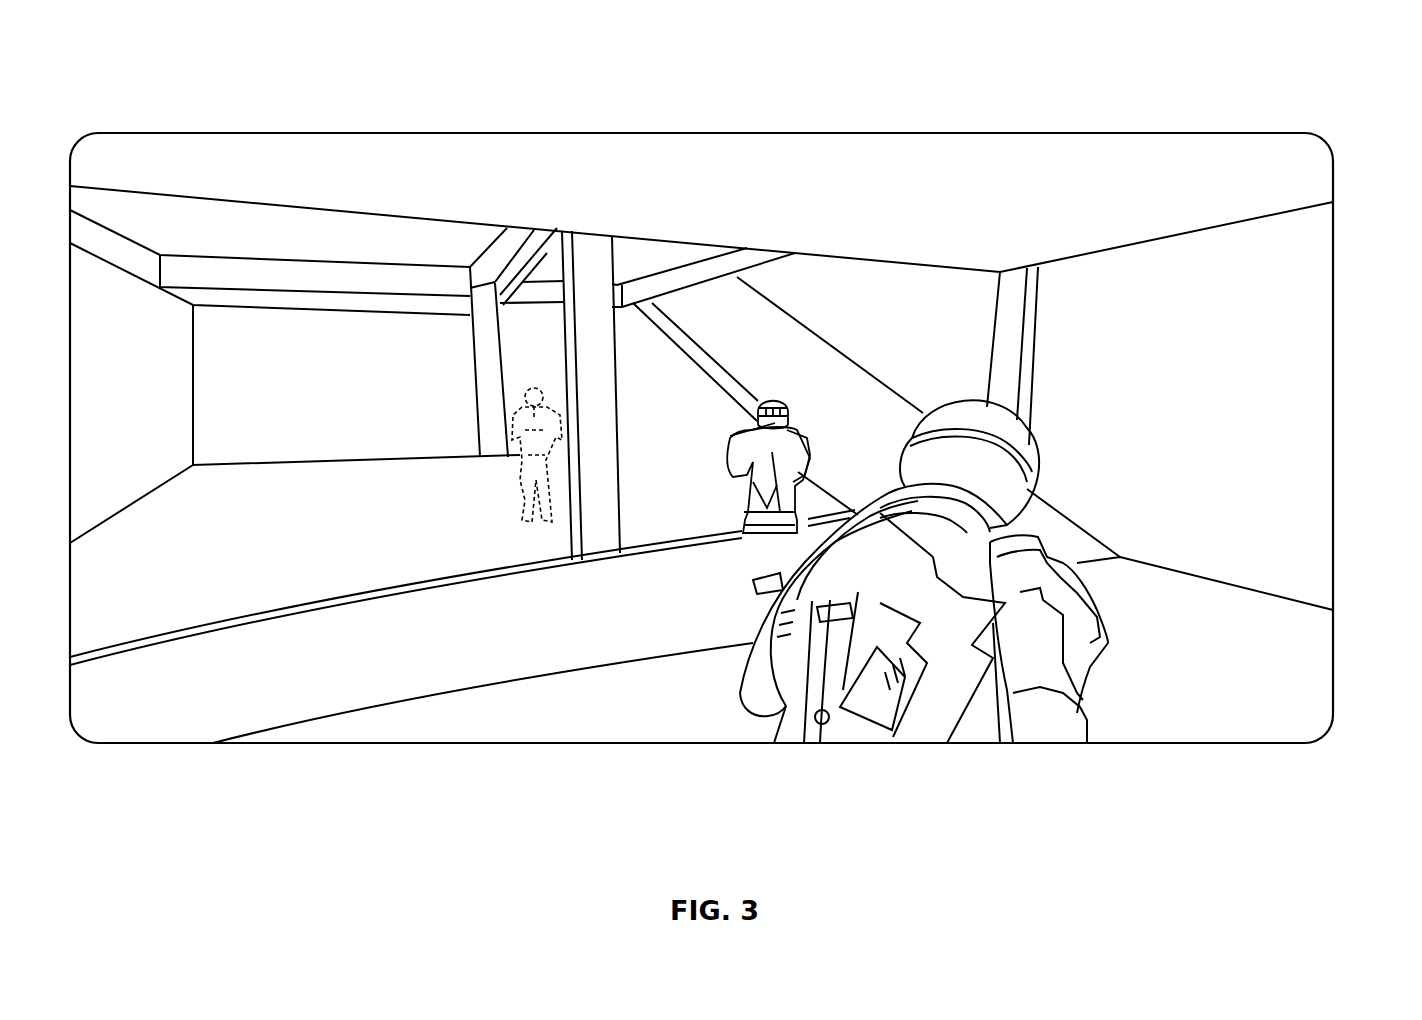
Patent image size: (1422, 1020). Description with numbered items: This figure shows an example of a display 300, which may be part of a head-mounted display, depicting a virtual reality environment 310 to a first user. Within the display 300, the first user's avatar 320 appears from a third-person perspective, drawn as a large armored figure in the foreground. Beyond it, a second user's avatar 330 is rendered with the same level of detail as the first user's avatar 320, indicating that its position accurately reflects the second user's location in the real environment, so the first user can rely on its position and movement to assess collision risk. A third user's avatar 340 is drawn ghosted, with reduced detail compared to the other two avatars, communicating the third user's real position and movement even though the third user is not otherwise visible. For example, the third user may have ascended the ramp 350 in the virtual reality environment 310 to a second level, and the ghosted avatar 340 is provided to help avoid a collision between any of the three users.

The display 300 is at (1296, 66).
The virtual reality environment 310 is at (1310, 407).
The first user's avatar 320 is at (1087, 663).
The second user's avatar 330 is at (789, 402).
The third user's avatar 340 is at (522, 462).
The ramp 350 is at (793, 340).